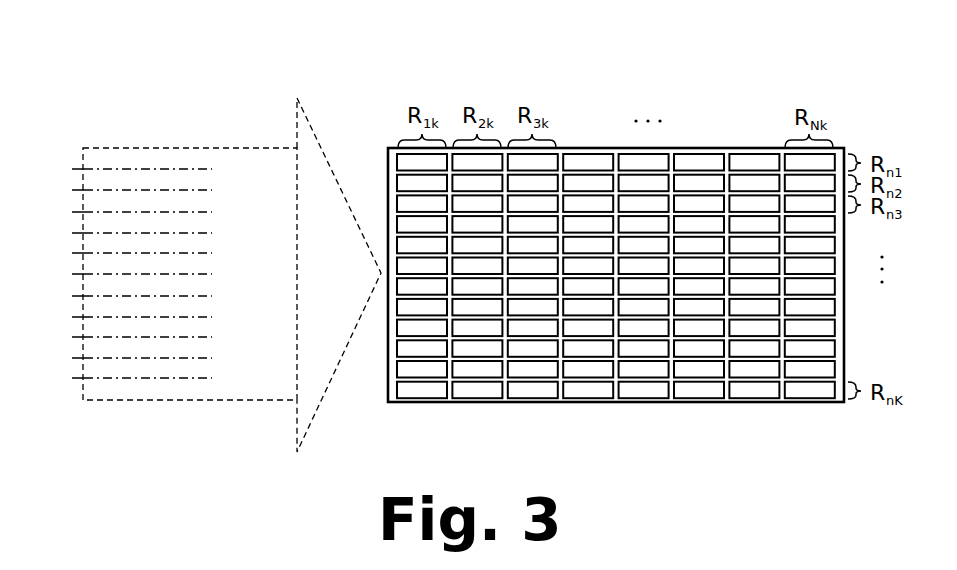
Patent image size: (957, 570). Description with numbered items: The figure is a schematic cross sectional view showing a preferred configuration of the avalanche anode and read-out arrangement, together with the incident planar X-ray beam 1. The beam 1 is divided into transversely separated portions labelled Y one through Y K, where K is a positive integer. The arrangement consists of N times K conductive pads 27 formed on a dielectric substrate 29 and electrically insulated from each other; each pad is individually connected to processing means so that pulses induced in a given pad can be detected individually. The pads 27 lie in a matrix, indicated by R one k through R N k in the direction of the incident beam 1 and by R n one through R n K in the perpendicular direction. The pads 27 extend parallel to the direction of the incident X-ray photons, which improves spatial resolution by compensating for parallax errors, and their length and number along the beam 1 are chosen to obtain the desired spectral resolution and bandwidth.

The planar X-ray beam 1 is at (266, 148).
The conductive pads 27 is at (583, 151).
The dielectric substrate 29 is at (681, 150).